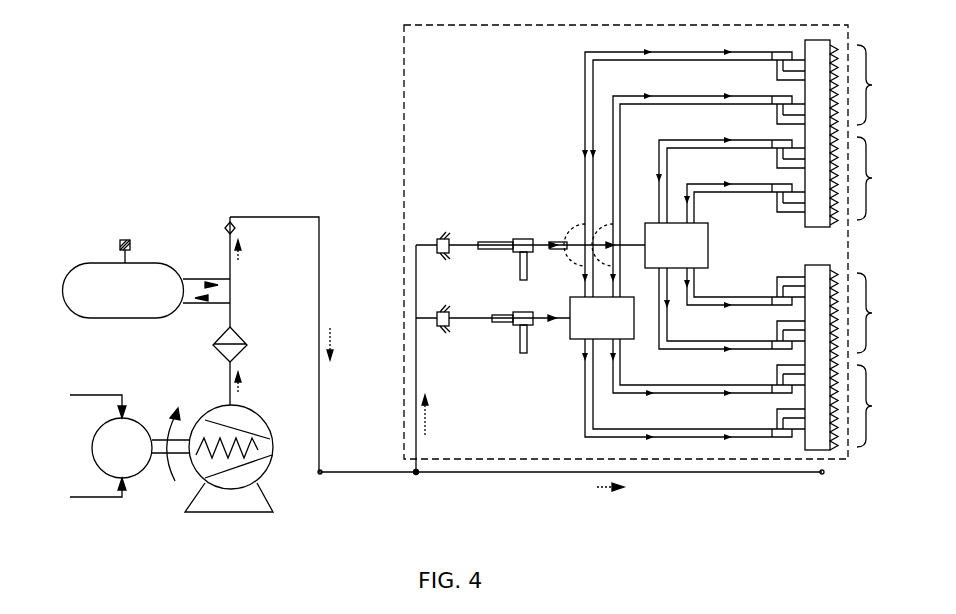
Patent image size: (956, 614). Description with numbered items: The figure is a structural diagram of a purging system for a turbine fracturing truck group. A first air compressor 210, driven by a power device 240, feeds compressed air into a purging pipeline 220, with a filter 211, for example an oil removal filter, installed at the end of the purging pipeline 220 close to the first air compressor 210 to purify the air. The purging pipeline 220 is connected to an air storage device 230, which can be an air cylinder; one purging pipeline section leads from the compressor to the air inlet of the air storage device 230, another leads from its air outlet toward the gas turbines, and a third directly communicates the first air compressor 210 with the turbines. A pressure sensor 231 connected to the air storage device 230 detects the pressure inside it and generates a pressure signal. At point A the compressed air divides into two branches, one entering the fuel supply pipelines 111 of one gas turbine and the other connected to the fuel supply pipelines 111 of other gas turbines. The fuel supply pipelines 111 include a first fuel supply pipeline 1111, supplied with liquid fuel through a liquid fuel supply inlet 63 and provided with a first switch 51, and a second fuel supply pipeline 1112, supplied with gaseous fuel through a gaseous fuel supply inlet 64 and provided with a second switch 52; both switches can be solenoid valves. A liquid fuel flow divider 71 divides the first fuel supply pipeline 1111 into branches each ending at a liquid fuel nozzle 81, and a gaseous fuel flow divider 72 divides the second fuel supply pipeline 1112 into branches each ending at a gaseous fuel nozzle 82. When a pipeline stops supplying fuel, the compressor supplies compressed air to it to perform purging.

The fuel supply pipelines 111 is at (403, 100).
The first fuel supply pipeline 1111 is at (540, 240).
The second fuel supply pipeline 1112 is at (554, 322).
The first switch 51 is at (437, 262).
The second switch 52 is at (437, 335).
The liquid fuel supply inlet 63 is at (520, 281).
The gaseous fuel supply inlet 64 is at (520, 354).
The liquid fuel flow divider 71 is at (687, 250).
The gaseous fuel flow divider 72 is at (610, 320).
The liquid fuel nozzle 81 is at (849, 293).
The gaseous fuel nozzle 82 is at (849, 243).
The first air compressor 210 is at (245, 513).
The filter 211 is at (238, 328).
The purging pipeline 220 is at (393, 475).
The air storage device 230 is at (100, 289).
The pressure sensor 231 is at (118, 238).
The power device 240 is at (105, 448).
The point A is at (418, 476).